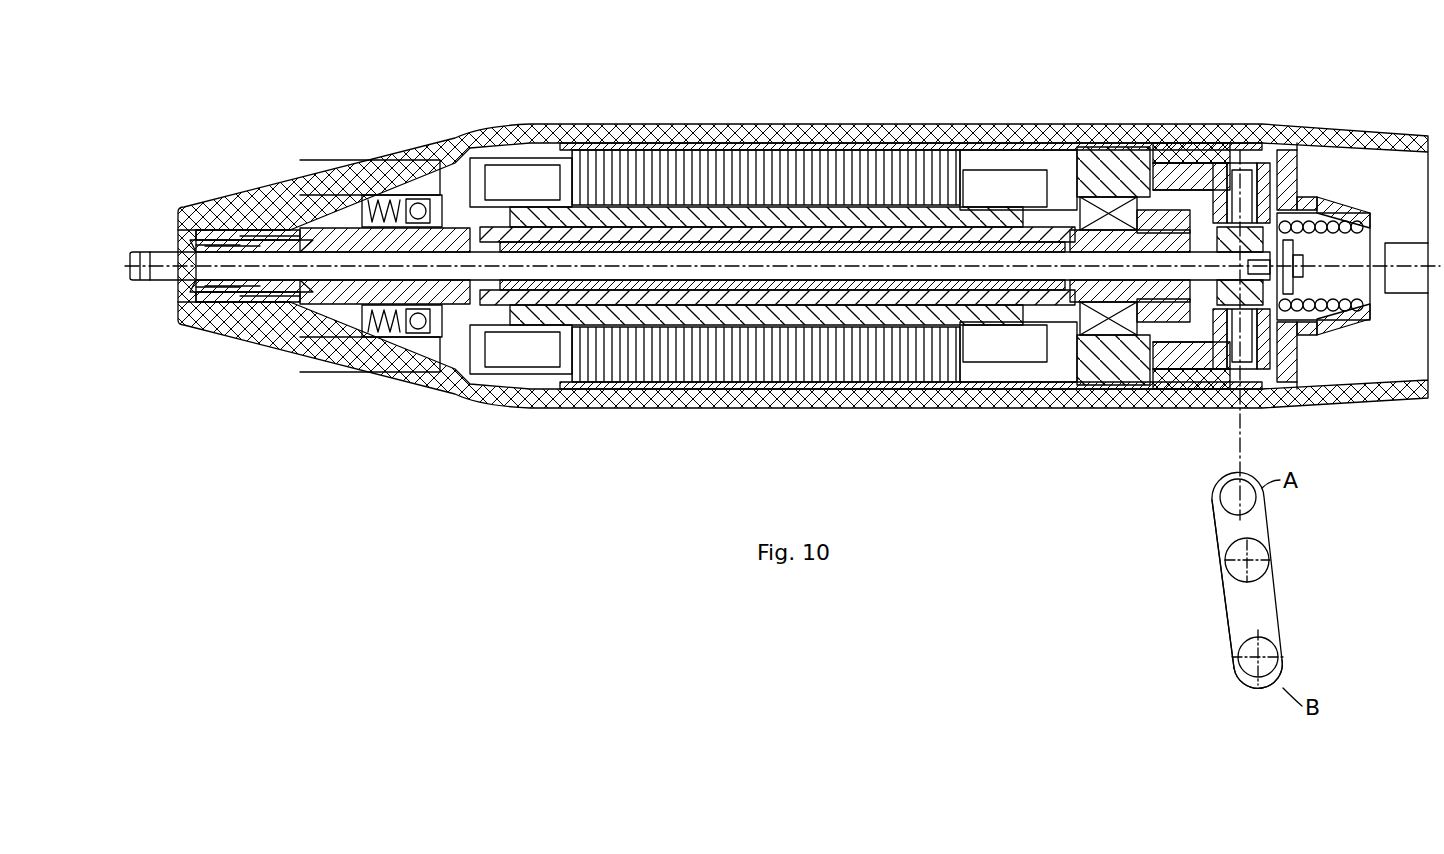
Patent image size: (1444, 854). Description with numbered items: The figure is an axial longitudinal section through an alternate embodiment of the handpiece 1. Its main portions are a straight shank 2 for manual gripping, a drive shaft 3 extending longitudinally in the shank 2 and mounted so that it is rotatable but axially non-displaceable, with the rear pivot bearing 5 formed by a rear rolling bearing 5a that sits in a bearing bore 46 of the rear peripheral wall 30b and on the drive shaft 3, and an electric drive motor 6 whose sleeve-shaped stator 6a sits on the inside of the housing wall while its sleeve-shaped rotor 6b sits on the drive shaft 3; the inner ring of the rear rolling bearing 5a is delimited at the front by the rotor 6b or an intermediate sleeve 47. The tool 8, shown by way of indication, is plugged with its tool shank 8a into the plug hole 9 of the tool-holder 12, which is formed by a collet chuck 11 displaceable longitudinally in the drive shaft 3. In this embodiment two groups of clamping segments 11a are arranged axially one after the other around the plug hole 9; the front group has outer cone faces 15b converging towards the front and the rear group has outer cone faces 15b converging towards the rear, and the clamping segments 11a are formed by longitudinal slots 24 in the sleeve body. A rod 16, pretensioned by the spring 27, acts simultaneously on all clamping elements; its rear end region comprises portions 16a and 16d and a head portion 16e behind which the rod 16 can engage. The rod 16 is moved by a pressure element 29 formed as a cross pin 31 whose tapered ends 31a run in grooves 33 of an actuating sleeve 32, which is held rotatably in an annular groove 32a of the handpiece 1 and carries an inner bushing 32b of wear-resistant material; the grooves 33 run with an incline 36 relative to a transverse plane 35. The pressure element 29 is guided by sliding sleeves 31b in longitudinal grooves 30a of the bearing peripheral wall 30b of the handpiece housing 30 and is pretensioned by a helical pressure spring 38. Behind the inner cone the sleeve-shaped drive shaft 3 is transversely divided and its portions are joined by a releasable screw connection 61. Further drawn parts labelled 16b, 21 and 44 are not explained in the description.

The handpiece 1 is at (912, 108).
The shank 2 is at (650, 425).
The drive shaft 3 is at (1068, 302).
The rear pivot bearing 5 is at (1110, 304).
The rear rolling bearing 5a is at (1103, 396).
The drive motor 6 is at (732, 142).
The stator 6a is at (808, 160).
The rotor 6b is at (828, 226).
The tool 8 is at (132, 246).
The tool shank 8a is at (176, 243).
The plug hole 9 is at (180, 288).
The collet chuck 11 is at (186, 234).
The clamping segments 11a is at (222, 207).
The tool-holder 12 is at (232, 310).
The outer cone faces 15b is at (215, 306).
The rod 16 is at (492, 390).
The rod portion 16a is at (716, 290).
The shaft section 16b is at (332, 312).
The rod portion 16d is at (1170, 390).
The head portion 16e is at (1296, 290).
The clamping sleeve 21 is at (310, 216).
The longitudinal slots 24 is at (262, 300).
The spring 27 is at (768, 300).
The pressure element 29 is at (1298, 330).
The handpiece housing 30 is at (1120, 143).
The longitudinal grooves 30a is at (1245, 168).
The bearing peripheral wall 30b is at (1010, 143).
The cross pin 31 is at (1295, 245).
The tapered ends 31a is at (1257, 178).
The sliding sleeves 31b is at (1297, 178).
The actuating sleeve 32 is at (1178, 165).
The annular groove 32a is at (1196, 158).
The inner bushing 32b is at (1212, 183).
The grooves 33 is at (1268, 180).
The transverse plane 35 is at (1240, 690).
The incline 36 is at (1222, 606).
The spring 38 is at (1342, 224).
The front bearing 44 is at (396, 362).
The bearing bore 46 is at (1140, 398).
The intermediate sleeve 47 is at (1045, 174).
The releasable connection 61 is at (270, 208).